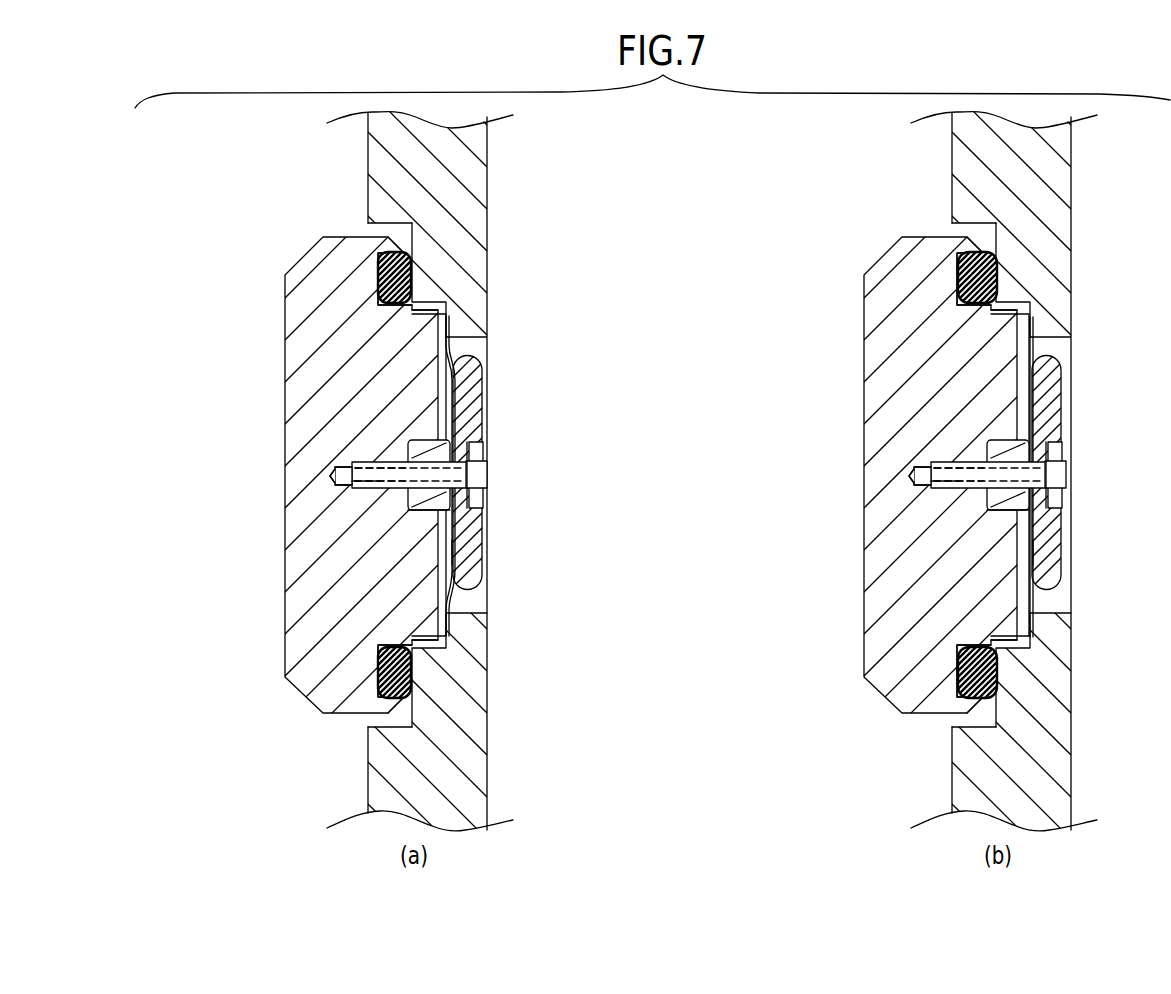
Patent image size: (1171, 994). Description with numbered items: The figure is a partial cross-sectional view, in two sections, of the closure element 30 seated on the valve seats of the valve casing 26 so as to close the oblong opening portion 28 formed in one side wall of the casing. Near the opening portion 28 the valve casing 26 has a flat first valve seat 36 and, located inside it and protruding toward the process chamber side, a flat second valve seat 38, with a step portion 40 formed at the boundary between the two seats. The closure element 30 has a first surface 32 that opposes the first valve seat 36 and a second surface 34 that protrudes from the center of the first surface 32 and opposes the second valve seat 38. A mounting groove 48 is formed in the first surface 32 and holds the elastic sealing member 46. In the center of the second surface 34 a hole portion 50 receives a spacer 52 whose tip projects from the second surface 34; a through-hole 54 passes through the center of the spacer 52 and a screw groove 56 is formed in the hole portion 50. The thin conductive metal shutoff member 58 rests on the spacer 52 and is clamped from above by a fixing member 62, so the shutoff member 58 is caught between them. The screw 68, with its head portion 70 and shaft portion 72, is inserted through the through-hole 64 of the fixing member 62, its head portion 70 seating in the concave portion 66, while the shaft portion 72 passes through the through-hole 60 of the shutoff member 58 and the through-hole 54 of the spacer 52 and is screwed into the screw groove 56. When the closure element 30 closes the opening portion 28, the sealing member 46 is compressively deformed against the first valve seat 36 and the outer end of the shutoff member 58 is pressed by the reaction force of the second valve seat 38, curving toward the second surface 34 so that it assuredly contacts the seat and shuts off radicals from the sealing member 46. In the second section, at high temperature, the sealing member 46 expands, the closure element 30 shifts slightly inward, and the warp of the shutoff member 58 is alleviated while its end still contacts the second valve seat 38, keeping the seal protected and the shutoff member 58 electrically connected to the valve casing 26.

The valve casing 26 is at (477, 727).
The opening portion 28 is at (466, 612).
The closure element 30 is at (285, 422).
The first surface 32 is at (414, 304).
The second surface 34 is at (453, 552).
The first valve seat 36 is at (375, 212).
The second valve seat 38 is at (432, 318).
The step portion 40 is at (412, 311).
The sealing member 46 is at (411, 265).
The mounting groove 48 is at (378, 250).
The hole portion 50 is at (408, 528).
The spacer 52 is at (448, 508).
The through-hole 54 is at (463, 476).
The screw groove 56 is at (330, 476).
The shutoff member 58 is at (450, 352).
The through-hole 60 is at (397, 466).
The fixing member 62 is at (483, 382).
The through-hole 64 is at (477, 440).
The concave portion 66 is at (483, 496).
The screw 68 is at (662, 471).
The head portion 70 is at (483, 458).
The shaft portion 72 is at (377, 498).